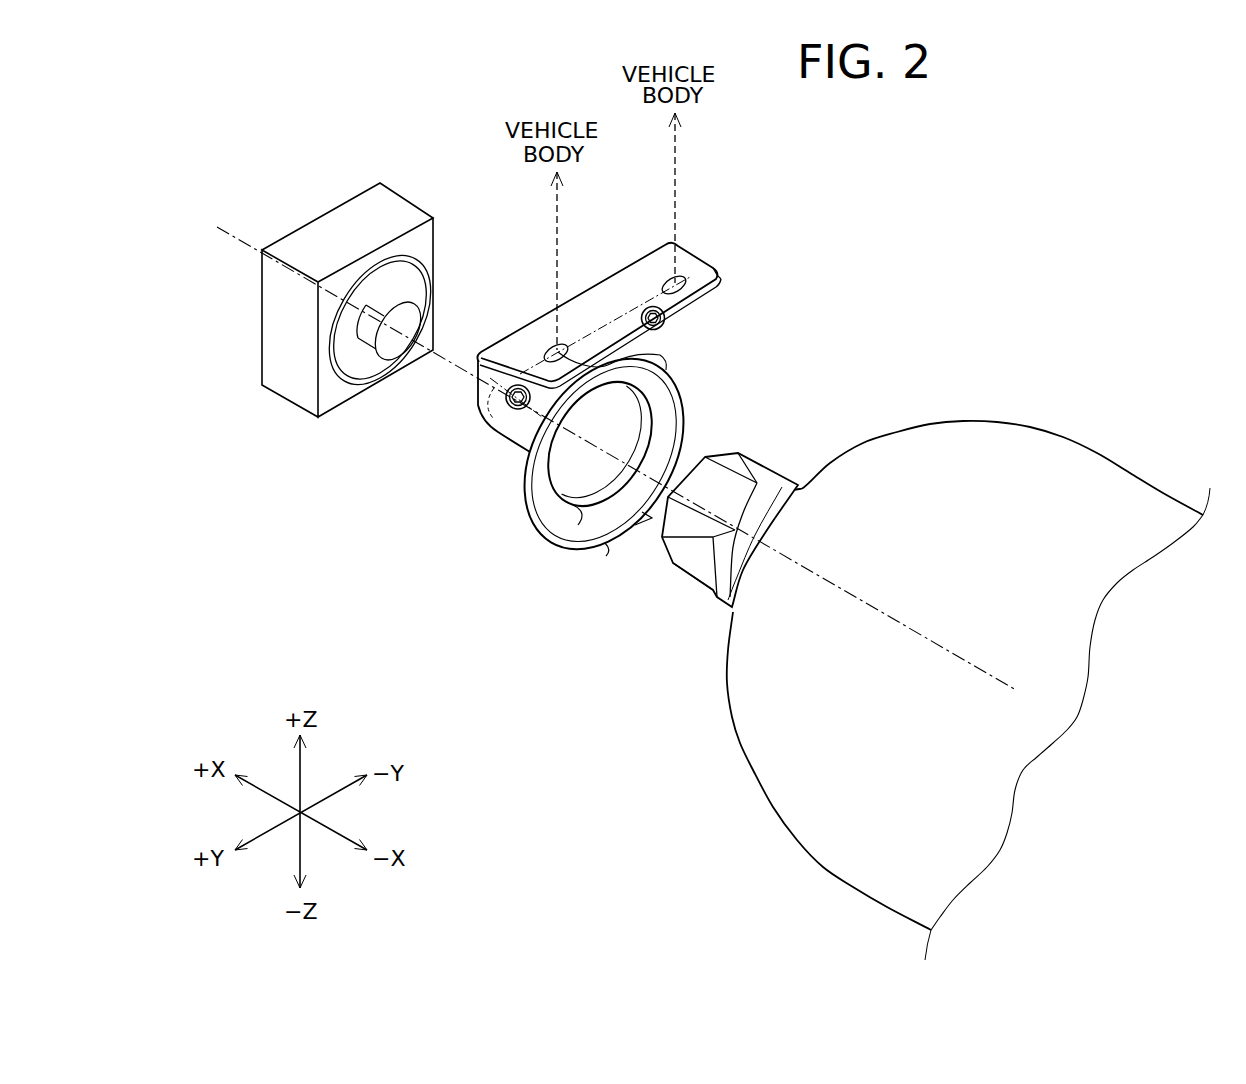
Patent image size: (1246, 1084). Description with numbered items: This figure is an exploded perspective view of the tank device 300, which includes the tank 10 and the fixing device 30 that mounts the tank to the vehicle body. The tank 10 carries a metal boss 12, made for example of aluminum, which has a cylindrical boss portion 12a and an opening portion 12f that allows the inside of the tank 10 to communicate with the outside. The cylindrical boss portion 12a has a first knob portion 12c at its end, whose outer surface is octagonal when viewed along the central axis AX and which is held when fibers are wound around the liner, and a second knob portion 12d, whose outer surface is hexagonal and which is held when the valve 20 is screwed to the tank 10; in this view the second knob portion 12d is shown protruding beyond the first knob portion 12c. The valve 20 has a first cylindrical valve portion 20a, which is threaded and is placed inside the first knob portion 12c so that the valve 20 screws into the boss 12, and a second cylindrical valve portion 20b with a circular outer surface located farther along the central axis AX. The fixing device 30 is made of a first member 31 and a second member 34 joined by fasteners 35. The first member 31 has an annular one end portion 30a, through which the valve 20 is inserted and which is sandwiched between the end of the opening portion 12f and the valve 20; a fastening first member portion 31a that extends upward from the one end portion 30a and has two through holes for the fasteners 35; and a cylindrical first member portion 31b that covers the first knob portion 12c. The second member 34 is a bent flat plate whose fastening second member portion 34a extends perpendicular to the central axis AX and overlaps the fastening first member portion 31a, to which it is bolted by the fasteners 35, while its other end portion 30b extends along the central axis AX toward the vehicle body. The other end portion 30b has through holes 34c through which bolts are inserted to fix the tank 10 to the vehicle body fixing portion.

The tank 10 is at (1108, 482).
The boss 12 is at (666, 550).
The cylindrical boss portion 12a is at (578, 605).
The first knob portion 12c is at (693, 570).
The second knob portion 12d is at (722, 603).
The opening portion 12f is at (608, 548).
The valve 20 is at (347, 285).
The first cylindrical valve portion 20a is at (412, 312).
The second cylindrical valve portion 20b is at (337, 316).
The fixing device 30 is at (841, 245).
The one end portion 30a is at (580, 515).
The other end portion 30b is at (708, 262).
The first member 31 is at (689, 454).
The fastening first member portion 31a is at (660, 353).
The cylindrical first member portion 31b is at (668, 426).
The second member 34 is at (641, 316).
The fastening second member portion 34a is at (680, 325).
The through holes 34c is at (634, 264).
The fasteners 35 is at (518, 412).
The tank device 300 is at (965, 212).
The central axis AX is at (232, 232).